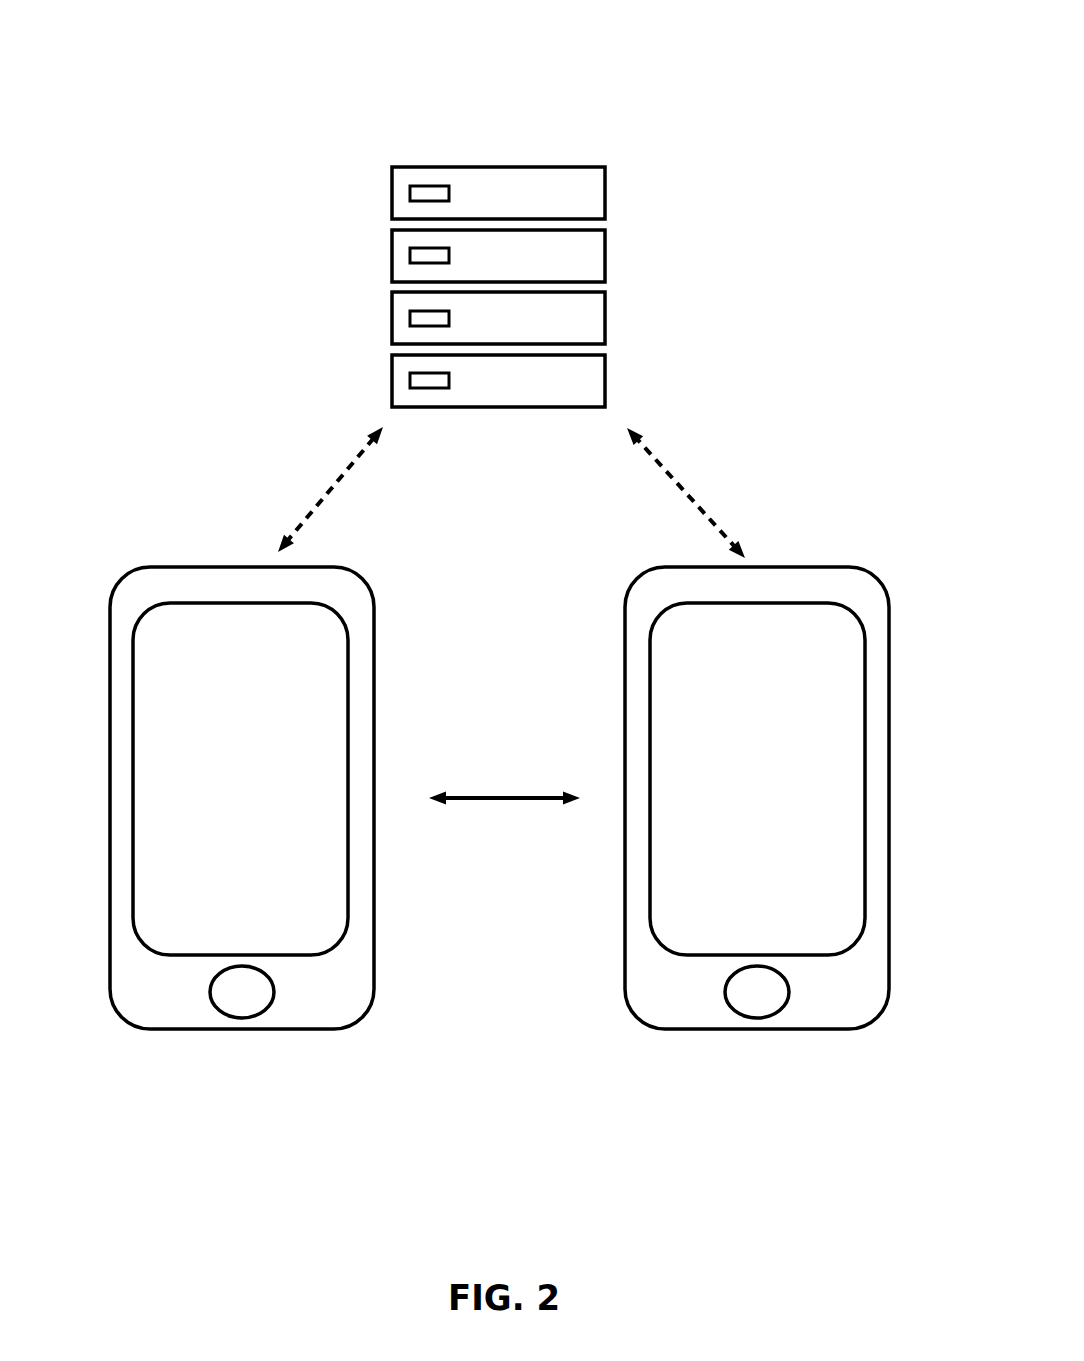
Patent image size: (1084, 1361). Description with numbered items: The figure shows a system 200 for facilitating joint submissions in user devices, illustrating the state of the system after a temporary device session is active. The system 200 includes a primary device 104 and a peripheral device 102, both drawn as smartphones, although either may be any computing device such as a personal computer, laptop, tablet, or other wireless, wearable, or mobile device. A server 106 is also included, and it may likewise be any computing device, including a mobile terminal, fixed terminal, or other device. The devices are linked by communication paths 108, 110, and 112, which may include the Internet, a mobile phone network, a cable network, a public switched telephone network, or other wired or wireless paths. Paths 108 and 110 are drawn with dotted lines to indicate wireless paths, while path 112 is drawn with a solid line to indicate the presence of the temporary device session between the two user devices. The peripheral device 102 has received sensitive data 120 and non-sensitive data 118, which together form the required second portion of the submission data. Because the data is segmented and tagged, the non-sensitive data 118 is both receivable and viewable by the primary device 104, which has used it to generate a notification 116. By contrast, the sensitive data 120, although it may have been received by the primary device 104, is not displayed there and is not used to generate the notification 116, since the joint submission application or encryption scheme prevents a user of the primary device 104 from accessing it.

The system 200 is at (511, 32).
The peripheral device 102 is at (787, 755).
The primary device 104 is at (213, 755).
The server 106 is at (622, 160).
The communication path 108 is at (697, 448).
The communication path 110 is at (302, 460).
The communication path 112 is at (487, 780).
The notification 116 is at (180, 817).
The non-sensitive data 118 is at (820, 788).
The sensitive data 120 is at (820, 883).